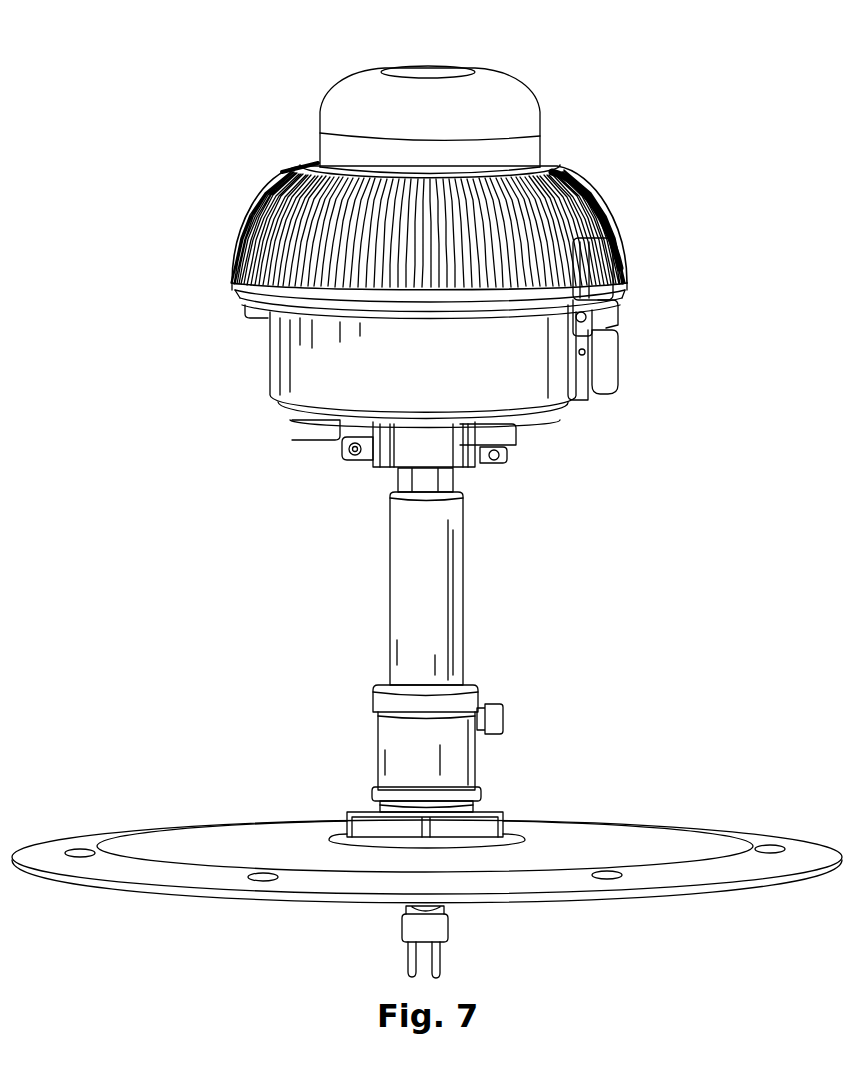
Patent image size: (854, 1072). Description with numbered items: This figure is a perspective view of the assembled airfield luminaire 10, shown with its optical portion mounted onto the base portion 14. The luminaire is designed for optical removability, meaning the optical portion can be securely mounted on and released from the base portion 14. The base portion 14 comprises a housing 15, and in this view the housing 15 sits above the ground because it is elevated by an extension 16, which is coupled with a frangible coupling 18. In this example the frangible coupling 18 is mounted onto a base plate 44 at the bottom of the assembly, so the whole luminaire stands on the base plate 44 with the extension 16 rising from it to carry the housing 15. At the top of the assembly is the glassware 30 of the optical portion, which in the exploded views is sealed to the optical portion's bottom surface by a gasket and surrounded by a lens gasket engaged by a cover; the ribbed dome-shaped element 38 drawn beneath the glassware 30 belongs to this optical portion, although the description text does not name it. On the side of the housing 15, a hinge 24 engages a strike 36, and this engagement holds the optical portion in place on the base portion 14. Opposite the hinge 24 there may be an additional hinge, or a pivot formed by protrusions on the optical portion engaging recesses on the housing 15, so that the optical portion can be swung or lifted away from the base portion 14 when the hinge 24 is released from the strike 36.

The airfield luminaire 10 is at (312, 57).
The base portion 14 is at (262, 352).
The housing 15 is at (330, 368).
The extension 16 is at (443, 632).
The frangible coupling 18 is at (452, 760).
The hinge 24 is at (603, 355).
The glassware 30 is at (528, 120).
The strike 36 is at (597, 282).
The lens dome 38 is at (590, 187).
The base plate 44 is at (657, 845).